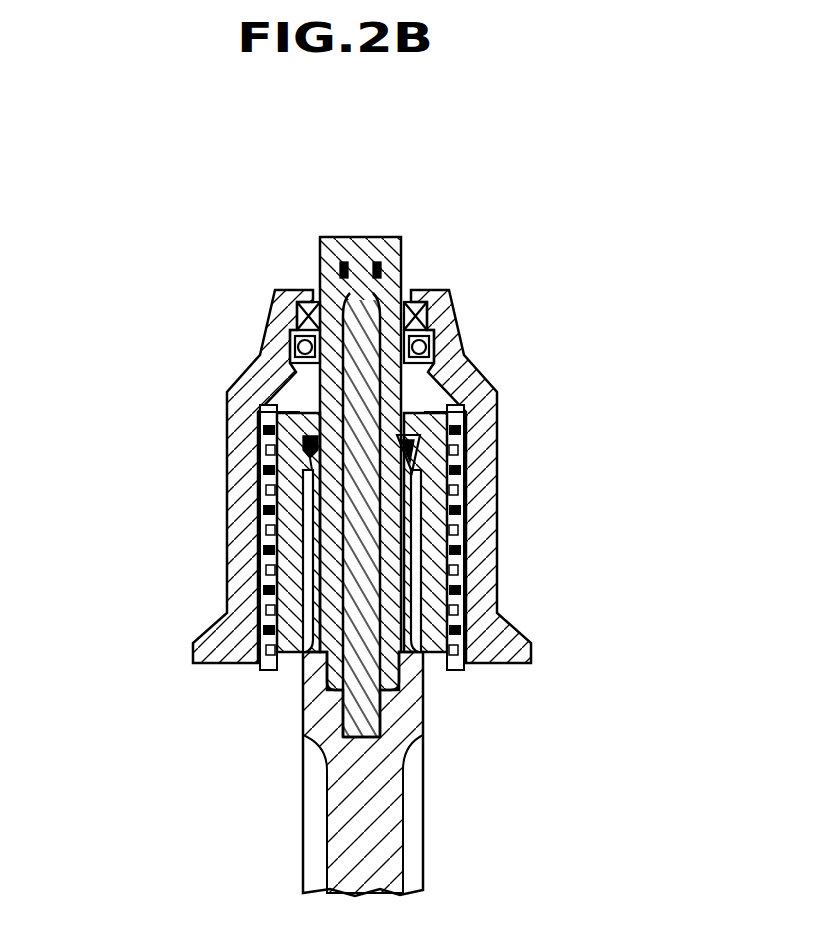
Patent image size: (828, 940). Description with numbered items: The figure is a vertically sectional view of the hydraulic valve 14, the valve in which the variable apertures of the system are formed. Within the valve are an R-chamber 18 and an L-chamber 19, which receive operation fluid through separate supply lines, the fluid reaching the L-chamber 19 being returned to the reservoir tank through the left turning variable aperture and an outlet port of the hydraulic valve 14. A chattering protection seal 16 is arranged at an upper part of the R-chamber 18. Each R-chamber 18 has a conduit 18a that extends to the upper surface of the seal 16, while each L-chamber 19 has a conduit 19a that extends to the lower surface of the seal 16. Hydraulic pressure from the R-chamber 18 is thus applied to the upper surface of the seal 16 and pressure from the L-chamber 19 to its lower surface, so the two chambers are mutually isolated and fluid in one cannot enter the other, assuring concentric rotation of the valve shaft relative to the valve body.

The hydraulic valve 14 is at (181, 255).
The chattering protection seal 16 is at (316, 432).
The R-chamber 18 is at (413, 503).
The conduit 18a is at (452, 468).
The L-chamber 19 is at (307, 505).
The conduit 19a is at (265, 466).